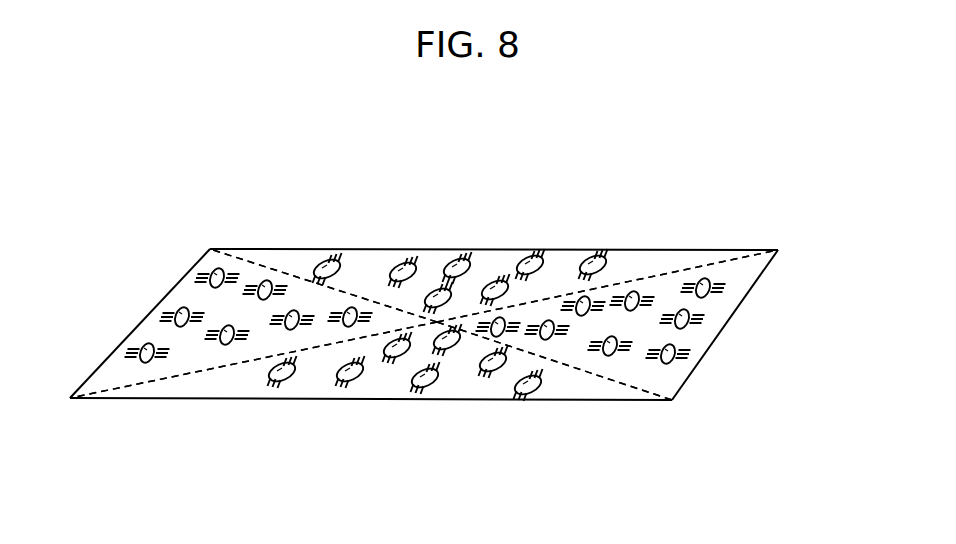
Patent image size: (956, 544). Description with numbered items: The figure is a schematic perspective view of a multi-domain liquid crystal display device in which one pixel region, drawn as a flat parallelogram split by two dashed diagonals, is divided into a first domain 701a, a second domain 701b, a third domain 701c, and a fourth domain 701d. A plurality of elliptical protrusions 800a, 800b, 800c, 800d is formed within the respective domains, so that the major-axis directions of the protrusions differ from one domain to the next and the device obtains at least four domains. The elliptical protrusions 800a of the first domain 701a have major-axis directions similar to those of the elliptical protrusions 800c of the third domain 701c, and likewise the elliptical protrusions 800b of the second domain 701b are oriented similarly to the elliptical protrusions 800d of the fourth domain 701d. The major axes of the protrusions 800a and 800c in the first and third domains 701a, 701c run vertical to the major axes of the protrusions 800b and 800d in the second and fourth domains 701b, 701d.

The first domain 701a is at (221, 389).
The second domain 701b is at (730, 302).
The third domain 701c is at (670, 258).
The fourth domain 701d is at (185, 295).
The elliptical protrusions of the first domain 800a is at (290, 380).
The elliptical protrusions of the second domain 800b is at (672, 360).
The elliptical protrusions of the third domain 800c is at (584, 252).
The elliptical protrusions of the fourth domain 800d is at (148, 342).